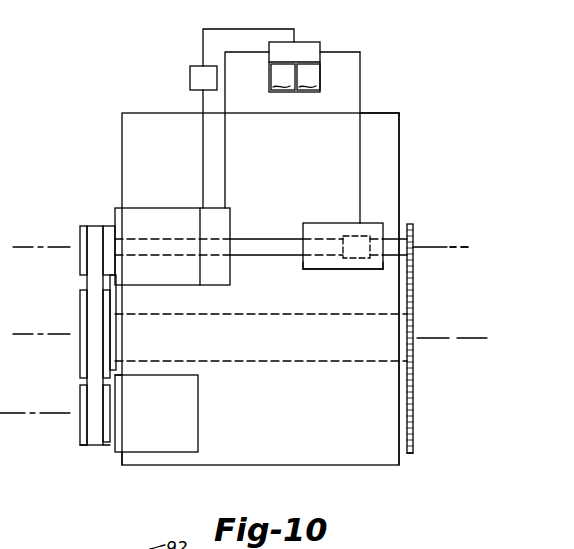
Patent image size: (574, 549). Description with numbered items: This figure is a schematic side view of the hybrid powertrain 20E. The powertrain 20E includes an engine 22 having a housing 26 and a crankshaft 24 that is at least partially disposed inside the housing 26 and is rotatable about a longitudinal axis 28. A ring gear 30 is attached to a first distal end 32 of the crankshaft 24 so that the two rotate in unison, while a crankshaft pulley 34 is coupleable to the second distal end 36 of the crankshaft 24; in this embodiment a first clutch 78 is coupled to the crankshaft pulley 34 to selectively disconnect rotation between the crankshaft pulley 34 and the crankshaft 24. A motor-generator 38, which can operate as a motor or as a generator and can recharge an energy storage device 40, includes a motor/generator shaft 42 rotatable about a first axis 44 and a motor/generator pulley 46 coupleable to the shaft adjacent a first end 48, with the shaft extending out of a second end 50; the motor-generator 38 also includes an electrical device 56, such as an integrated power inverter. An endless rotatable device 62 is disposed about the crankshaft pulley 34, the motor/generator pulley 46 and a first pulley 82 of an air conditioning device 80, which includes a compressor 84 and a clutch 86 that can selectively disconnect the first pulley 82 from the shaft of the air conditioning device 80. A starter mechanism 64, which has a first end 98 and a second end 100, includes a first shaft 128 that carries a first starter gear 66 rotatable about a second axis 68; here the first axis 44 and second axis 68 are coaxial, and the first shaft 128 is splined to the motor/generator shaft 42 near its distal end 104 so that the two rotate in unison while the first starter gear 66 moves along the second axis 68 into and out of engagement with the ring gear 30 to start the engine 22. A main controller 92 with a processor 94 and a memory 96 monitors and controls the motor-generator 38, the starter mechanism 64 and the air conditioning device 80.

The powertrain 20E is at (424, 98).
The engine 22 is at (134, 113).
The crankshaft 24 is at (342, 363).
The housing 26 is at (388, 148).
The longitudinal axis 28 is at (452, 340).
The ring gear 30 is at (413, 438).
The first distal end 32 is at (407, 365).
The crankshaft pulley 34 is at (80, 360).
The second distal end 36 is at (117, 370).
The motor-generator 38 is at (172, 208).
The energy storage device 40 is at (190, 78).
The motor/generator shaft 42 is at (290, 237).
The first axis 44 is at (462, 240).
The motor/generator pulley 46 is at (80, 228).
The first end 48 is at (113, 223).
The second end 50 is at (232, 270).
The electrical device 56 is at (220, 220).
The endless rotatable device 62 is at (92, 278).
The starter mechanism 64 is at (337, 272).
The first starter gear 66 is at (413, 232).
The second axis 68 is at (476, 212).
The first clutch 78 is at (115, 338).
The air conditioning device 80 is at (112, 448).
The first pulley 82 is at (80, 438).
The compressor 84 is at (155, 445).
The clutch 86 is at (120, 412).
The main controller 92 is at (292, 111).
The processor 94 is at (283, 77).
The memory 96 is at (309, 77).
The first end 98 is at (384, 268).
The second end 100 is at (303, 267).
The distal end 104 is at (372, 258).
The first shaft 128 is at (396, 228).